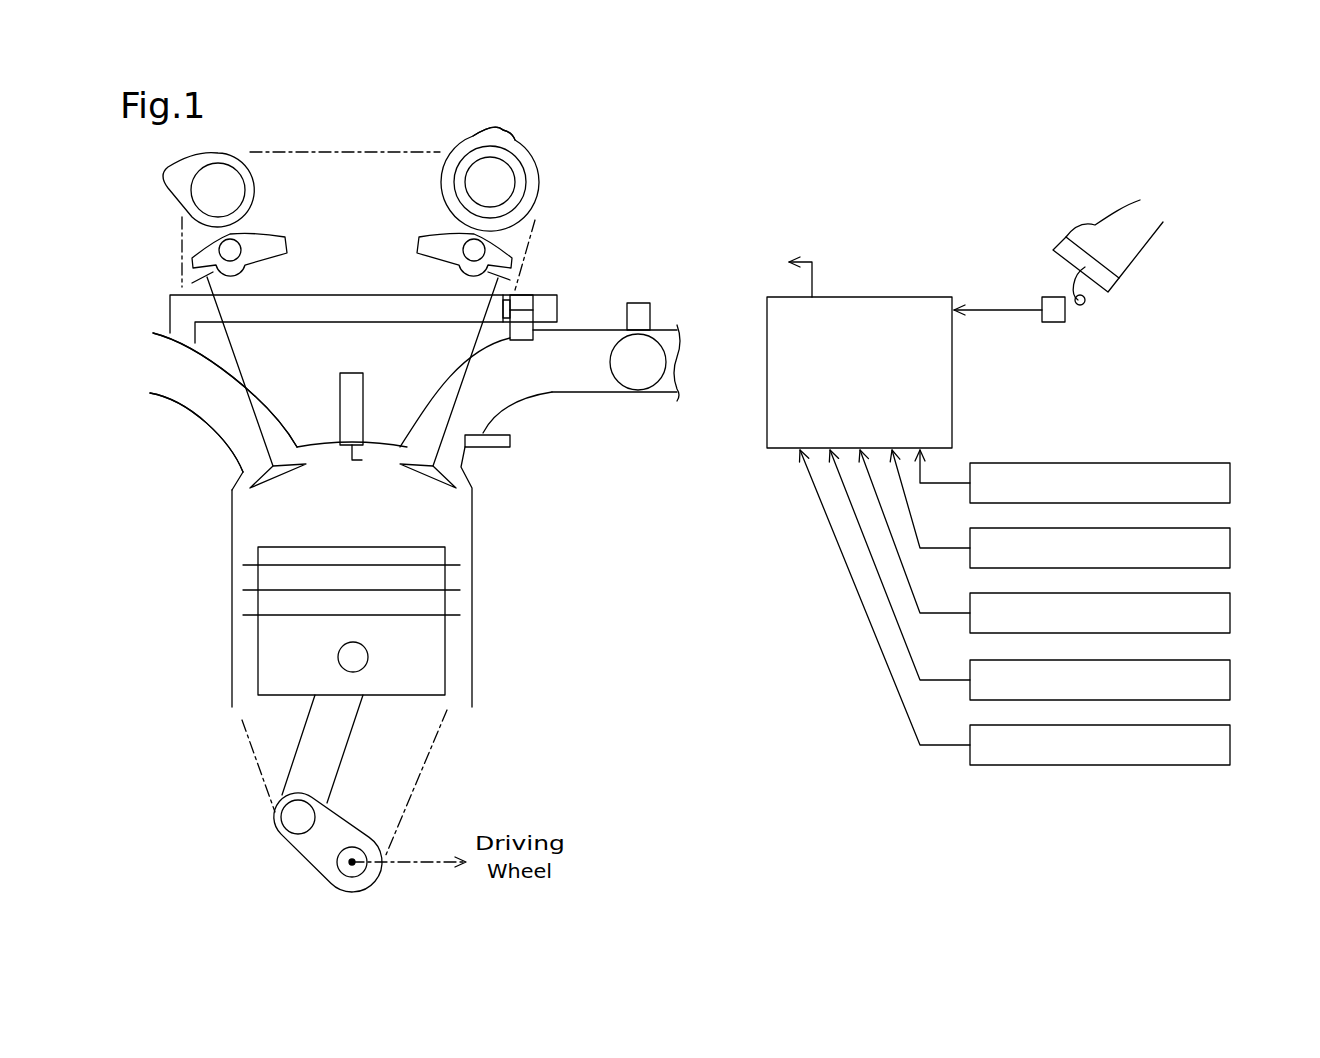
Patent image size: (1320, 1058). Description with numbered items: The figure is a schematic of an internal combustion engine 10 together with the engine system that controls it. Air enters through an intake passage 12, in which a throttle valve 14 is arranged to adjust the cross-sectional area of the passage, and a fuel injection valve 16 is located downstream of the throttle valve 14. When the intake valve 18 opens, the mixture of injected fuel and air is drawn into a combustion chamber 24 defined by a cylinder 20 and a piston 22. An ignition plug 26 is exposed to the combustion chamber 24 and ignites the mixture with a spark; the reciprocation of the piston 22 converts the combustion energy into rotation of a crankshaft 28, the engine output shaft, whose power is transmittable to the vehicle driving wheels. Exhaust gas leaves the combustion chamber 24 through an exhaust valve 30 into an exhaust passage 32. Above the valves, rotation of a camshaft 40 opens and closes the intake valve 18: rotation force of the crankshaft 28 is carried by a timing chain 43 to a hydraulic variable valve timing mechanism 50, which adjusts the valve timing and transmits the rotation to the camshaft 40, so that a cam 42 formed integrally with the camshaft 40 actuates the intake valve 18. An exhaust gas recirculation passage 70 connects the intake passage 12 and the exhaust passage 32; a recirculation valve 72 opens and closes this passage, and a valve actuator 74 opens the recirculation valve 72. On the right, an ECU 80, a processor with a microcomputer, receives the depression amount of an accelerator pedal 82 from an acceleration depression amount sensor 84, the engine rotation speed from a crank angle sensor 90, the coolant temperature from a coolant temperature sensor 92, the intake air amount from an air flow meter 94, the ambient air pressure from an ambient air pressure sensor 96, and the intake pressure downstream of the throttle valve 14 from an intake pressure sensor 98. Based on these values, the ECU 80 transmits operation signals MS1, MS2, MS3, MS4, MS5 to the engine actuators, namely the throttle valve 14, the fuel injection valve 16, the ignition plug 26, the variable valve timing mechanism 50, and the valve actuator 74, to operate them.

The internal combustion engine 10 is at (638, 190).
The intake passage 12 is at (597, 388).
The throttle valve 14 is at (641, 385).
The fuel injection valve 16 is at (495, 448).
The intake valve 18 is at (418, 462).
The cylinder 20 is at (473, 526).
The piston 22 is at (437, 657).
The combustion chamber 24 is at (364, 528).
The ignition plug 26 is at (363, 385).
The crankshaft 28 is at (355, 847).
The exhaust valve 30 is at (243, 472).
The exhaust passage 32 is at (183, 398).
The camshaft 40 is at (478, 172).
The cam 42 is at (503, 131).
The timing chain 43 is at (283, 152).
The hydraulic variable valve timing mechanism 50 is at (534, 160).
The exhaust gas recirculation passage 70 is at (432, 322).
The recirculation valve 72 is at (510, 293).
The valve actuator 74 is at (547, 295).
The ECU 80 is at (895, 297).
The accelerator pedal 82 is at (1083, 305).
The acceleration depression amount sensor 84 is at (1052, 322).
The crank angle sensor 90 is at (1230, 483).
The coolant temperature sensor 92 is at (1230, 548).
The air flow meter 94 is at (1230, 613).
The ambient air pressure sensor 96 is at (1230, 680).
The intake pressure sensor 98 is at (1230, 745).
The operation signal MS1 is at (653, 312).
The operation signal MS2 is at (513, 441).
The operation signal MS3 is at (352, 371).
The operation signal MS4 is at (541, 178).
The operation signal MS5 is at (560, 310).